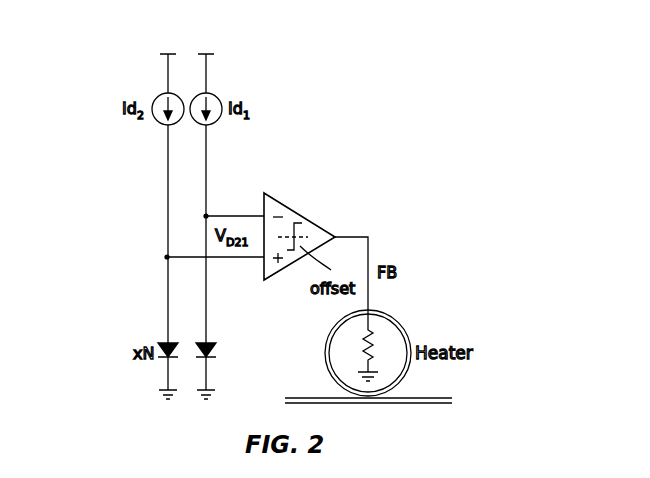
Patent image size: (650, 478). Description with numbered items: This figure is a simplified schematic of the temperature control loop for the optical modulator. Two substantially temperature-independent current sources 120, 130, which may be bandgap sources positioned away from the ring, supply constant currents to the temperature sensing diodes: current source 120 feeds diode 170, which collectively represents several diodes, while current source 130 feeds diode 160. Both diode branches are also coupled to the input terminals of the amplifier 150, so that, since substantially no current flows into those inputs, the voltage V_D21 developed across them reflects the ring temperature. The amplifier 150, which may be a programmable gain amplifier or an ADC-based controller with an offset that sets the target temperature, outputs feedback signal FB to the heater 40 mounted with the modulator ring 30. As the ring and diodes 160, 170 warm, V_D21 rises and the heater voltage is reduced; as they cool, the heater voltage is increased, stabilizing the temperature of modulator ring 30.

The current source 120 is at (163, 93).
The current source 130 is at (212, 93).
The amplifier 150 is at (295, 212).
The diode 170 is at (163, 343).
The diode 160 is at (212, 343).
The modulator ring 30 is at (385, 316).
The heater 40 is at (362, 340).